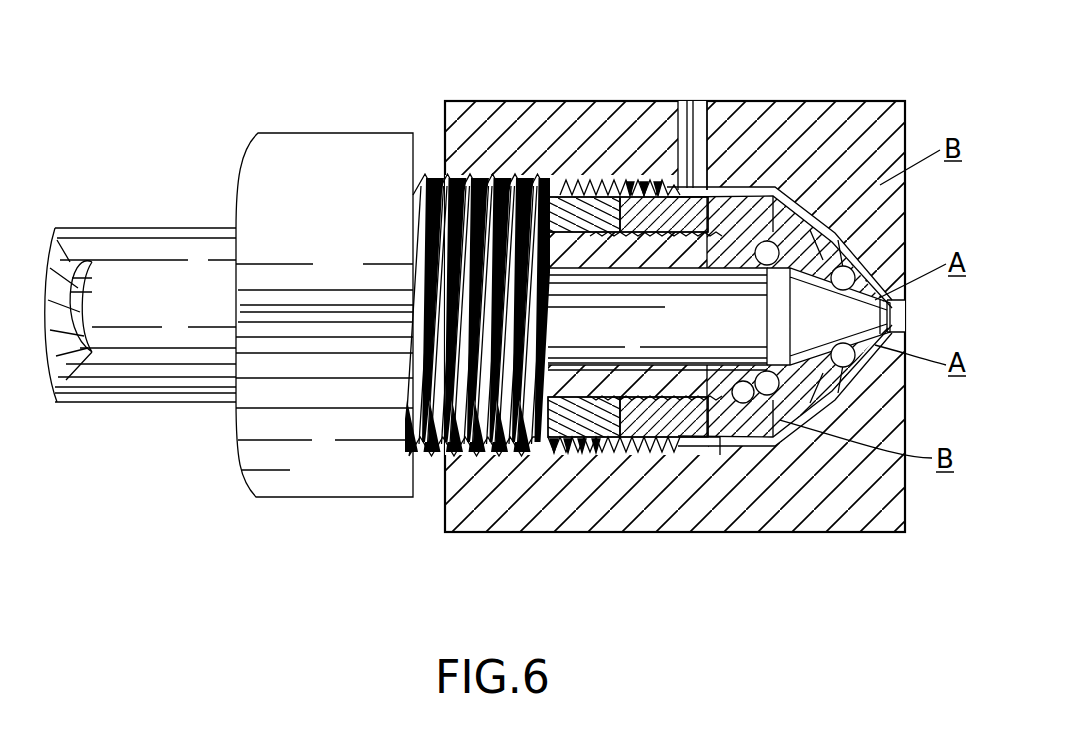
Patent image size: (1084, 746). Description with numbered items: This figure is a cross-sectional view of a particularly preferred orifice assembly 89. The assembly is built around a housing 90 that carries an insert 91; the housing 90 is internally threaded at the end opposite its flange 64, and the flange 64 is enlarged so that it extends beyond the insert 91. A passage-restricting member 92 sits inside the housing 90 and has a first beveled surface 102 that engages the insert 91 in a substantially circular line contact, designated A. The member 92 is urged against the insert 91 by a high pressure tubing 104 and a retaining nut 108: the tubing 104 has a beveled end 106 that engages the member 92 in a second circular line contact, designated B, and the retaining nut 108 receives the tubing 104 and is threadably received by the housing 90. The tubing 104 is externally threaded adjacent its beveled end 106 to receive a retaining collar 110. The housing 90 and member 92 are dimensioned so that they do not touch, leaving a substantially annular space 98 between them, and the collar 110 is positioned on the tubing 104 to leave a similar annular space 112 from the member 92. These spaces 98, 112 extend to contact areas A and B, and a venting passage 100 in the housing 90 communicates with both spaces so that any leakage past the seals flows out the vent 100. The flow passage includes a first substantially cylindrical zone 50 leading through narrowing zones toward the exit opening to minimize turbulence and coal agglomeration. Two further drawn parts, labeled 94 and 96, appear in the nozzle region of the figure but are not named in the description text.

The first substantially cylindrical zone 50 is at (708, 307).
The flange 64 is at (870, 210).
The orifice assembly 89 is at (424, 547).
The housing 90 is at (548, 100).
The insert 91 is at (908, 310).
The passage-restricting member 92 is at (732, 200).
The nozzle 94 is at (780, 195).
The nozzle tip 96 is at (800, 175).
The annular space 98 is at (880, 140).
The venting passage 100 is at (695, 110).
The first beveled surface 102 is at (860, 245).
The high pressure tubing 104 is at (130, 240).
The beveled end 106 is at (760, 380).
The retaining nut 108 is at (340, 185).
The retaining collar 110 is at (479, 315).
The annular space 112 is at (720, 427).